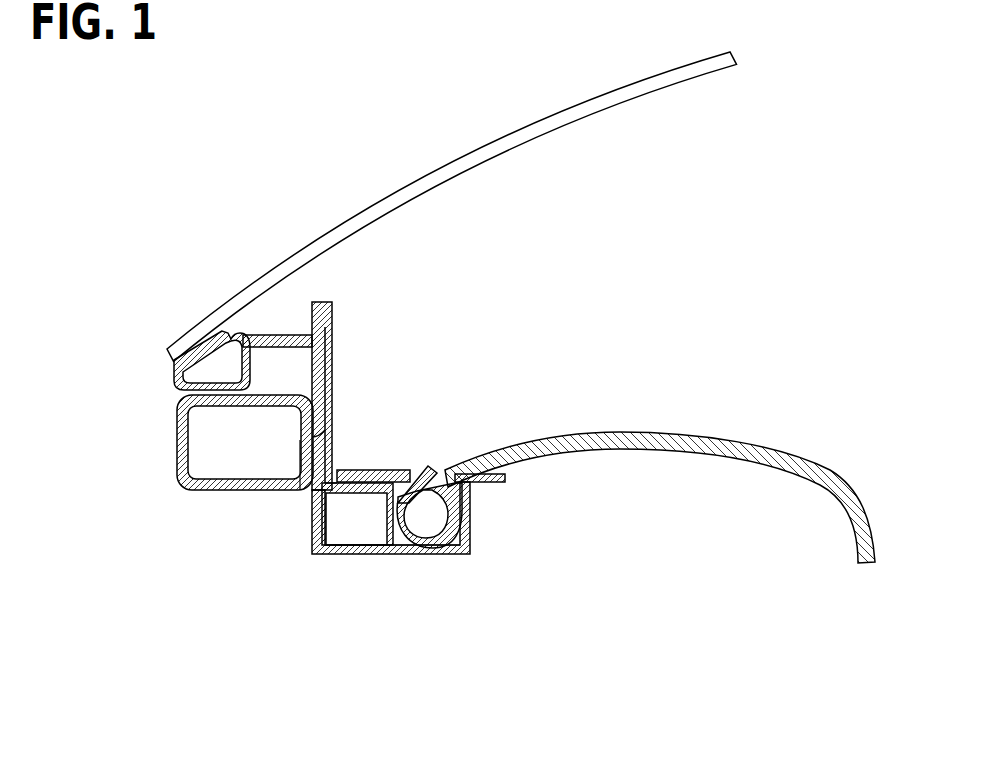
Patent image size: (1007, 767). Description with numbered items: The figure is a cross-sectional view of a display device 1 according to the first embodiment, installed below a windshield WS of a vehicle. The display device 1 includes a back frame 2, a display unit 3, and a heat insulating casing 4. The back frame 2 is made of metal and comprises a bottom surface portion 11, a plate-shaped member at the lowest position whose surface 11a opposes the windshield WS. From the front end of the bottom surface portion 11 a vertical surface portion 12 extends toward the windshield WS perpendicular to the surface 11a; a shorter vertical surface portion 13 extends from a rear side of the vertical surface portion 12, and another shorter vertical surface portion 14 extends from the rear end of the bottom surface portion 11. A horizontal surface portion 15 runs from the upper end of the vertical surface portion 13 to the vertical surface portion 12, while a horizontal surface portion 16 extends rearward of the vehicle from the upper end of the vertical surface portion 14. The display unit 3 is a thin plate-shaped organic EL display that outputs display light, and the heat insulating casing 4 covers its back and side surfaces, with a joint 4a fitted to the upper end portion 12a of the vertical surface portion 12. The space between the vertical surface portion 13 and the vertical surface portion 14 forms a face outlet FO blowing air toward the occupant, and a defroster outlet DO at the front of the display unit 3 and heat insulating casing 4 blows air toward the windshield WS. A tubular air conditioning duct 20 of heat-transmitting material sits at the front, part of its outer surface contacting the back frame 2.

The display device 1 is at (352, 296).
The back frame 2 is at (313, 493).
The display unit 3 is at (332, 352).
The heat insulating casing 4 is at (311, 366).
The joint 4a is at (330, 432).
The bottom surface portion 11 is at (400, 546).
The surface 11a is at (365, 524).
The vertical surface portion 12 is at (314, 526).
The upper end portion 12a is at (300, 465).
The vertical surface portion 13 is at (350, 548).
The vertical surface portion 14 is at (470, 520).
The horizontal surface portion 15 is at (381, 479).
The horizontal surface portion 16 is at (503, 471).
The air conditioning duct 20 is at (178, 470).
The windshield WS is at (402, 196).
The defroster outlet DO is at (231, 326).
The face outlet FO is at (461, 474).